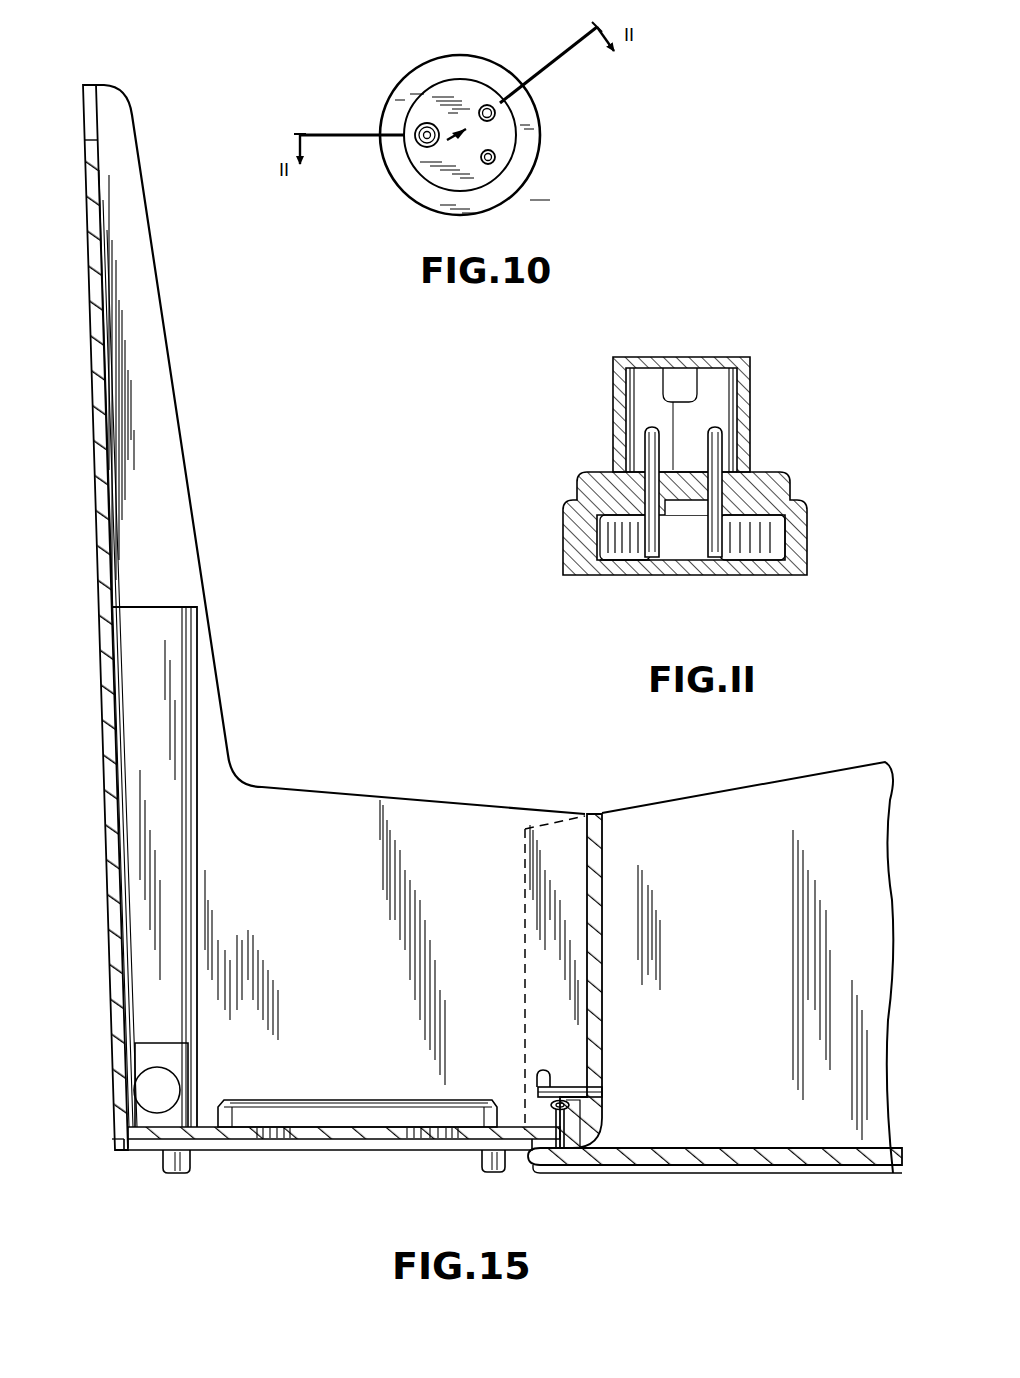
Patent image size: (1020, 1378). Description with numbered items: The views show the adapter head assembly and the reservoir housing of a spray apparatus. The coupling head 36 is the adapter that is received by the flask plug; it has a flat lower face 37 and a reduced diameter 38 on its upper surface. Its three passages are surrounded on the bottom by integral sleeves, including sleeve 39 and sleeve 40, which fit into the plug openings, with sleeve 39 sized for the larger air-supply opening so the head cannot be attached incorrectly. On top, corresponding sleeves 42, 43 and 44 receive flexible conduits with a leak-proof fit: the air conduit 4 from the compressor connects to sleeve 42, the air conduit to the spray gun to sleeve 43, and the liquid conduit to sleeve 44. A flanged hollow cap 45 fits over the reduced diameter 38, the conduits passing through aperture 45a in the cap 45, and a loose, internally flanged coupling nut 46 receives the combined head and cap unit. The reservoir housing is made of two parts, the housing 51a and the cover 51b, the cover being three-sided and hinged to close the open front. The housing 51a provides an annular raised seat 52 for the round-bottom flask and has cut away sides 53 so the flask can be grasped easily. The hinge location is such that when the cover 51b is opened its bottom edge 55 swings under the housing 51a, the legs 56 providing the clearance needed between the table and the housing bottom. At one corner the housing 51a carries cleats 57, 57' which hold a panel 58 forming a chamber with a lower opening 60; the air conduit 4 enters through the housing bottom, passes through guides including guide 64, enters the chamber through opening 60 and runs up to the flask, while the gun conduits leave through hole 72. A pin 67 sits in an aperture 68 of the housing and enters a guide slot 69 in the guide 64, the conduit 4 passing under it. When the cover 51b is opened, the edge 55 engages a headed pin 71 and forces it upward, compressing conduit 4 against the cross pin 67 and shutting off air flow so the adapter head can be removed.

In FIG. 10, the coupling head 36 is at (507, 135).
In FIG. 11, the coupling head 36 is at (686, 467).
In FIG. 10, the reduced diameter 38 is at (516, 157).
In FIG. 11, the reduced diameter 38 is at (745, 548).
In FIG. 10, the sleeve 42 is at (418, 128).
In FIG. 11, the sleeve 42 is at (641, 441).
In FIG. 10, the sleeve 43 is at (489, 105).
In FIG. 11, the sleeve 43 is at (726, 436).
In FIG. 10, the sleeve 44 is at (494, 163).
In FIG. 11, the flanged hollow cap 45 is at (754, 392).
In FIG. 11, the aperture 45a is at (700, 392).
In FIG. 11, the coupling nut 46 is at (565, 558).
In FIG. 11, the flat lower face 37 is at (622, 538).
In FIG. 11, the sleeve 39 is at (668, 550).
In FIG. 11, the sleeve 40 is at (706, 530).
In FIG. 15, the housing 51a is at (108, 868).
In FIG. 15, the cover 51b is at (702, 793).
In FIG. 15, the annular raised seat 52 is at (302, 1100).
In FIG. 15, the cut away sides 53 is at (158, 291).
In FIG. 15, the bottom edge 55 is at (526, 1160).
In FIG. 15, the legs 56 is at (191, 1163).
In FIG. 15, the cleat 57 is at (83, 648).
In FIG. 15, the cleat 57' is at (240, 867).
In FIG. 15, the panel 58 is at (177, 858).
In FIG. 15, the lower opening 60 is at (160, 1053).
In FIG. 15, the guide 64 is at (553, 1110).
In FIG. 15, the pin 67 is at (560, 1087).
In FIG. 15, the aperture 68 is at (590, 1073).
In FIG. 15, the guide slot 69 is at (538, 1072).
In FIG. 15, the headed pin 71 is at (590, 1143).
In FIG. 15, the hole 72 is at (148, 1088).
In FIG. 15, the air conduit 4 is at (580, 1107).